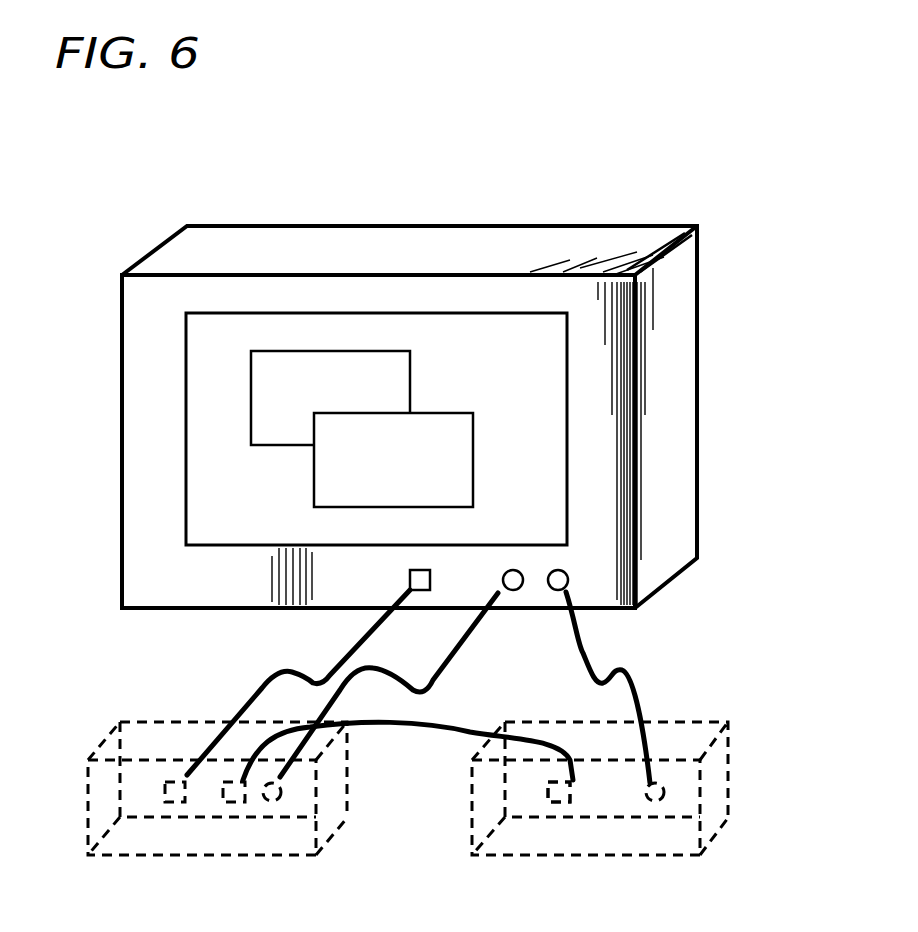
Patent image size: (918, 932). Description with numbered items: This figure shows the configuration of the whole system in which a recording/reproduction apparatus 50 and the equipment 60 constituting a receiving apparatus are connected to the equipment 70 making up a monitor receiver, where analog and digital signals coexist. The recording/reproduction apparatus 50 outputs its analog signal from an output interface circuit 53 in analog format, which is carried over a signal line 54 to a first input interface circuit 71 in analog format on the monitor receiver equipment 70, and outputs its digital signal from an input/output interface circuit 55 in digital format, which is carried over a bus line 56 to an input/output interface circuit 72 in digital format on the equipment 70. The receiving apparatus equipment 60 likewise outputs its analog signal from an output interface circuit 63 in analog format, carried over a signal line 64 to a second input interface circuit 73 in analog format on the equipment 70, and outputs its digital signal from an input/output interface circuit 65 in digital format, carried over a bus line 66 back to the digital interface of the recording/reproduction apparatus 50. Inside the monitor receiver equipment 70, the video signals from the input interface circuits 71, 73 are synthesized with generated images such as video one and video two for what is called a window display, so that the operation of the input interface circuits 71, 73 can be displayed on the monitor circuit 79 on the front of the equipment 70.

The equipment making up the monitor receiver 70 is at (122, 367).
The monitor circuit 79 is at (185, 493).
The input/output interface circuit in digital format 72 is at (430, 572).
The first input interface circuit in analog format 71 is at (522, 573).
The second input interface circuit in analog format 73 is at (567, 573).
The bus line 56 is at (240, 710).
The signal line 54 is at (327, 707).
The bus line 66 is at (443, 723).
The signal line 64 is at (637, 705).
The recording/reproduction apparatus 50 is at (100, 738).
The input/output interface circuit in digital format 55 is at (160, 785).
The output interface circuit in analog format 53 is at (270, 802).
The equipment constituting the receiving apparatus 60 is at (465, 840).
The input/output interface circuit in digital format 65 is at (549, 803).
The output interface circuit in analog format 63 is at (650, 802).